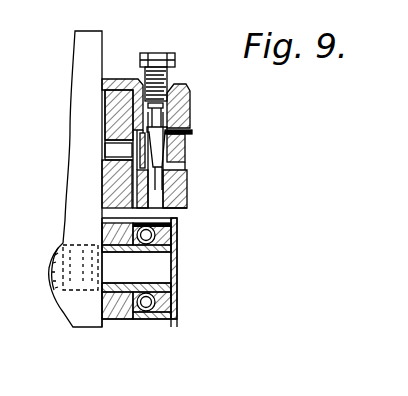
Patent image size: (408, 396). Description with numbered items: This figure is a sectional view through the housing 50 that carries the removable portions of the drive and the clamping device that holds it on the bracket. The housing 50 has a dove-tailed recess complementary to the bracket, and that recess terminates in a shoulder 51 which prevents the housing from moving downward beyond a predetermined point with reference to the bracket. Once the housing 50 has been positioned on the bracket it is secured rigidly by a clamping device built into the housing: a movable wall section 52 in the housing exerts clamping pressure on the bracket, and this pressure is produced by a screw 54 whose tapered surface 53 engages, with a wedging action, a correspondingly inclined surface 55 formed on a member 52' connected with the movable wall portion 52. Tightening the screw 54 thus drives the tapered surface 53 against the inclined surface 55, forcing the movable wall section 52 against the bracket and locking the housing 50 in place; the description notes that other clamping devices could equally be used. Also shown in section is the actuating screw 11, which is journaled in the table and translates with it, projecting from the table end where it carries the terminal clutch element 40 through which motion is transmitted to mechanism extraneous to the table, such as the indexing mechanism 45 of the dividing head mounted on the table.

The actuating screw 11 is at (56, 284).
The terminal clutch element 40 is at (174, 233).
The indexing mechanism 45 is at (117, 310).
The housing 50 is at (190, 99).
The shoulder 51 is at (107, 80).
The movable wall section 52 is at (85, 149).
The member 52' is at (196, 130).
The tapered surface 53 is at (155, 147).
The screw 54 is at (167, 72).
The inclined surface 55 is at (185, 163).